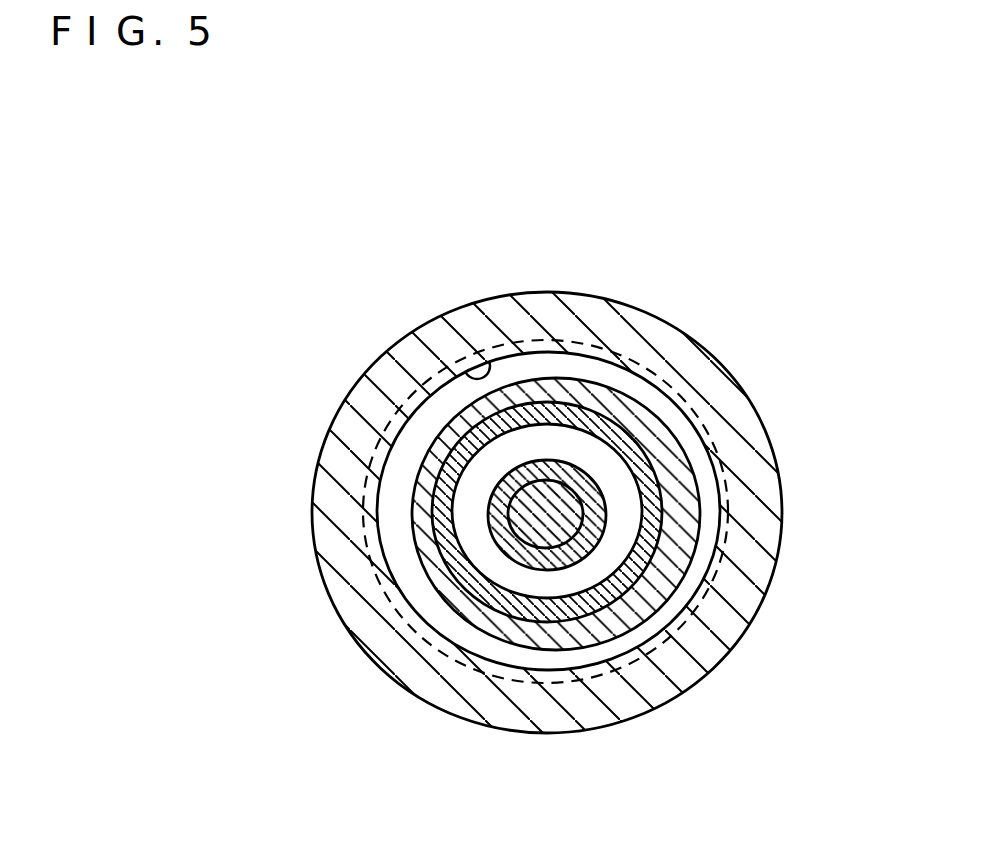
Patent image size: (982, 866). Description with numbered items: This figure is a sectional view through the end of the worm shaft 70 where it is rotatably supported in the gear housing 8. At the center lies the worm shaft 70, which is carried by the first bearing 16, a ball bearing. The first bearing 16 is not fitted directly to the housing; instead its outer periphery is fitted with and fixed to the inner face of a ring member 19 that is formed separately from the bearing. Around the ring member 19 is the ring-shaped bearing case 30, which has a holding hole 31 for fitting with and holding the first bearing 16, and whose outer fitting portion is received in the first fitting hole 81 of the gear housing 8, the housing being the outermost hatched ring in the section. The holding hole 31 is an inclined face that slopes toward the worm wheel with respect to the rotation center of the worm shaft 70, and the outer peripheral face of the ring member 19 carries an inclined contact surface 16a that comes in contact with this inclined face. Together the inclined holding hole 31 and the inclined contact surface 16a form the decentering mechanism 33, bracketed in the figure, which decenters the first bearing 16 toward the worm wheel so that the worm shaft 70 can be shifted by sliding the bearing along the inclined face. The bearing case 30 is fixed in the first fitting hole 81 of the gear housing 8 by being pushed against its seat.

The gear housing 8 is at (497, 286).
The first bearing 16 is at (532, 622).
The inclined contact surface 16a is at (413, 541).
The ring member 19 is at (478, 590).
The bearing case 30 is at (385, 433).
The holding hole 31 is at (414, 537).
The decentering mechanism 33 is at (200, 540).
The worm shaft 70 is at (560, 535).
The first fitting hole 81 is at (449, 378).